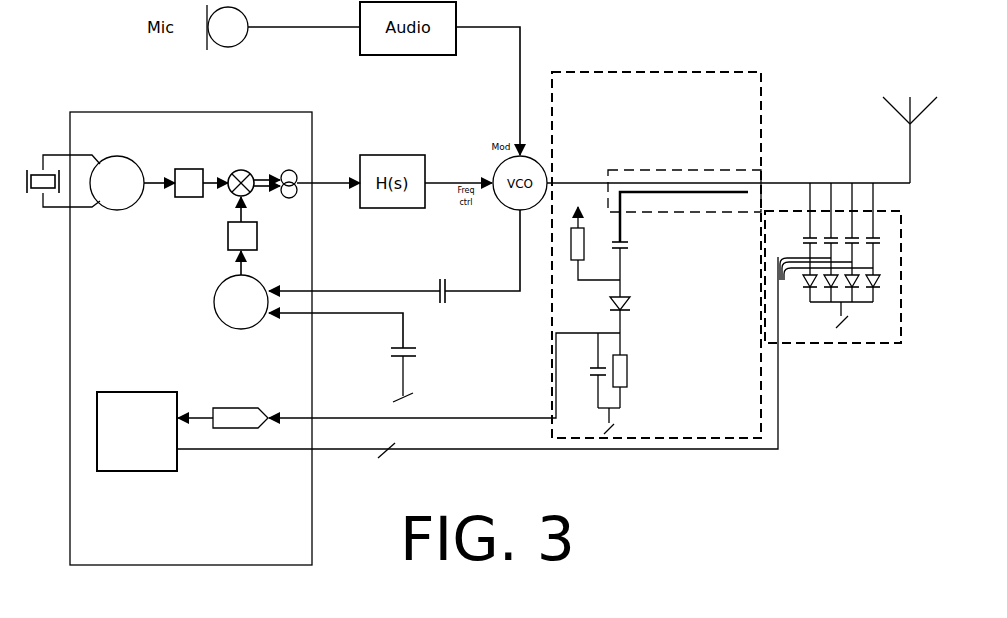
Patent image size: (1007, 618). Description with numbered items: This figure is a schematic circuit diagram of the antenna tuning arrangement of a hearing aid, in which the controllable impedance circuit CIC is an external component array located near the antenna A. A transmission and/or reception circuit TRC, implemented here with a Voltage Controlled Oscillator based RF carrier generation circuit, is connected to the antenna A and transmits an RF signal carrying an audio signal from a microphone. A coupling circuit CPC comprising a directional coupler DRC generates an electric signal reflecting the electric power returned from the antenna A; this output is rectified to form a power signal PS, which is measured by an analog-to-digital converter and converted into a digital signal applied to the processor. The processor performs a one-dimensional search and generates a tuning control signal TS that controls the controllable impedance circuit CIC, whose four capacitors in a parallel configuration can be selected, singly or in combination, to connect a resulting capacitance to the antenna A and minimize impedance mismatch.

The transmission and/or reception circuit TRC is at (136, 129).
The coupling circuit CPC is at (655, 70).
The directional coupler DRC is at (687, 142).
The antenna A is at (896, 77).
The controllable impedance circuit CIC is at (827, 343).
The power signal PS is at (441, 417).
The tuning control signal TS is at (560, 451).